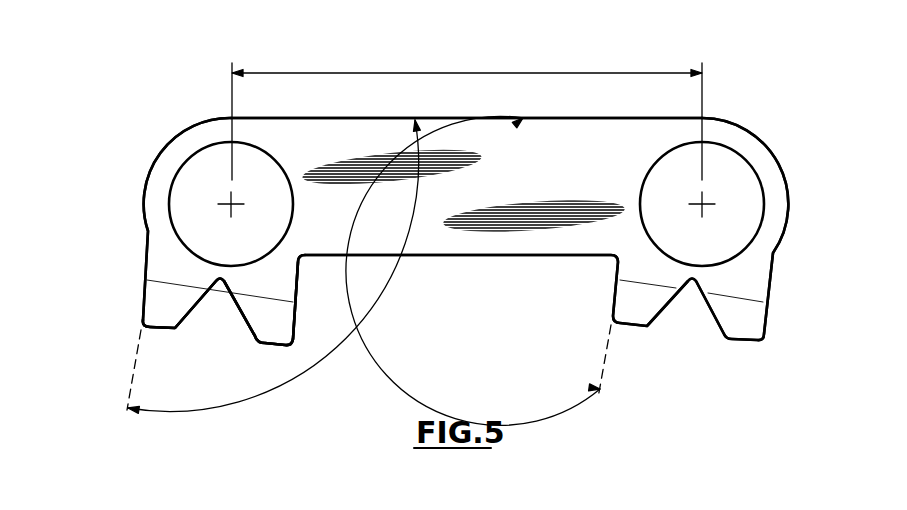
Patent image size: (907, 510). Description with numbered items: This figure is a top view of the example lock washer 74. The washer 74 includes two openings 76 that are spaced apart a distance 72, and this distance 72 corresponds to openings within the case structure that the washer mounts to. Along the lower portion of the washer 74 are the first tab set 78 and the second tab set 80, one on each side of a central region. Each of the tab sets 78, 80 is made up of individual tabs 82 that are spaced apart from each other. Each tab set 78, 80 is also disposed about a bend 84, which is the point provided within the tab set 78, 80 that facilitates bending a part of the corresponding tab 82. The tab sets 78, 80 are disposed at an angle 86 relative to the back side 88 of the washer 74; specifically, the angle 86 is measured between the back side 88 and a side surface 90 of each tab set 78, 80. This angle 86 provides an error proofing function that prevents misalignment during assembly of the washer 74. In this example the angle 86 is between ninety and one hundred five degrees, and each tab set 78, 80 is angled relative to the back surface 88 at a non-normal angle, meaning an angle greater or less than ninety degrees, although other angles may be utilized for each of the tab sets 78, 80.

The distance 72 is at (447, 73).
The lock washer 74 is at (803, 82).
The openings 76 is at (169, 198).
The first tab set 78 is at (222, 362).
The second tab set 80 is at (668, 384).
The tabs 82 is at (152, 308).
The bend 84 is at (138, 277).
The angle 86 is at (357, 332).
The back side 88 is at (550, 118).
The side surface 90 is at (128, 380).